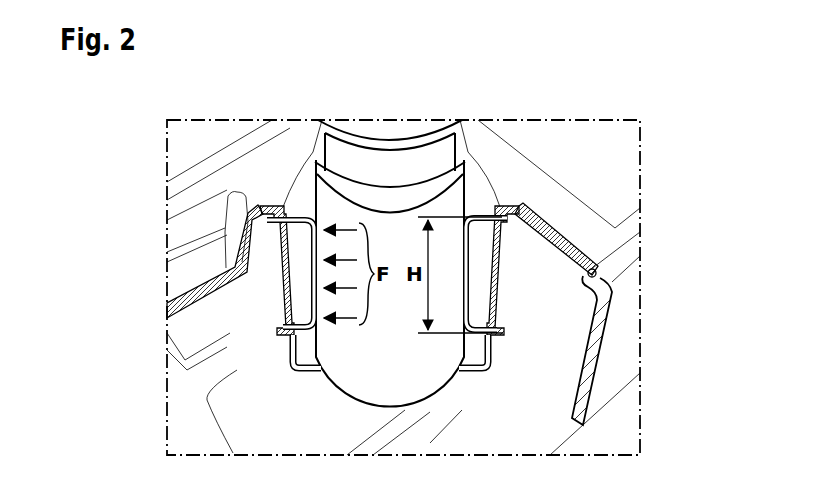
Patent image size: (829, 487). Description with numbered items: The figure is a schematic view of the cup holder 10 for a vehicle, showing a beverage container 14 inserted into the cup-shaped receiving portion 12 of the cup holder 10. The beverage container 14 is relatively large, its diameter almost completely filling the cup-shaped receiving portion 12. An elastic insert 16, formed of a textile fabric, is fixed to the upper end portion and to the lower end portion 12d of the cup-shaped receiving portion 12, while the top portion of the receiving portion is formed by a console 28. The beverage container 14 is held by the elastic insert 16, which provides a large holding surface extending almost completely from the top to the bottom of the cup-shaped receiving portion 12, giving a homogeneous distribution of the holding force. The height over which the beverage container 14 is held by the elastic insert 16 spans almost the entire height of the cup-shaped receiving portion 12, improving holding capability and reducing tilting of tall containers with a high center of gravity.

The cup holder 10 is at (283, 176).
The cup-shaped receiving portion 12 is at (270, 282).
The lower end portion 12d is at (630, 300).
The console 28 is at (568, 217).
The beverage container 14 is at (393, 187).
The elastic insert 16 is at (285, 207).